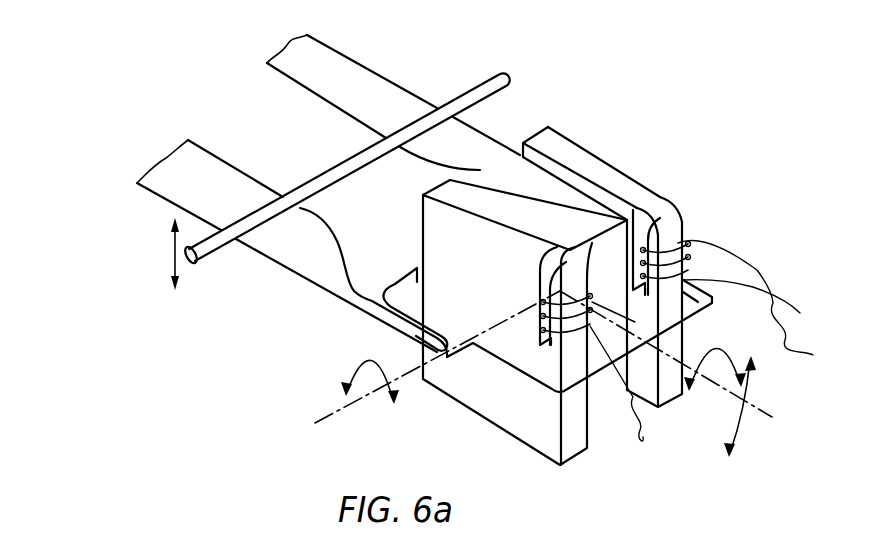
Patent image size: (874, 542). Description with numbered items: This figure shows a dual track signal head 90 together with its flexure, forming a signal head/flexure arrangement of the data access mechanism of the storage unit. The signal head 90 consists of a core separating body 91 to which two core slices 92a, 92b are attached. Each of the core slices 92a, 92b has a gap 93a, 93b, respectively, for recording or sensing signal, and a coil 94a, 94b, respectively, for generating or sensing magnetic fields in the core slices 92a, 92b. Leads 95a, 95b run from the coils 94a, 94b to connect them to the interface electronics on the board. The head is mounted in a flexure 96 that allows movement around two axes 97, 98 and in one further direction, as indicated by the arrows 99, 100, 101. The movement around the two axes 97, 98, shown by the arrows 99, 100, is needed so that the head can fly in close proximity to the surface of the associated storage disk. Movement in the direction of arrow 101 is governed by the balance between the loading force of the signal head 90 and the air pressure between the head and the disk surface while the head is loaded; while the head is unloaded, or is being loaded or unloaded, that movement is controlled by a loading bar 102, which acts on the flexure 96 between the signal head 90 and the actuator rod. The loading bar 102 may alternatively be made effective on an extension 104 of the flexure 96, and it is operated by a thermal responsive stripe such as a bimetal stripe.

The dual track signal head 90 is at (548, 205).
The core separating body 91 is at (487, 183).
The core slice 92a is at (440, 243).
The core slice 92b is at (613, 178).
The gap 93a is at (547, 248).
The gap 93b is at (645, 198).
The coil 94a is at (547, 302).
The coil 94b is at (703, 243).
The lead 95a is at (633, 407).
The lead 95b is at (793, 312).
The flexure 96 is at (378, 98).
The axis 97 is at (342, 410).
The axis 98 is at (772, 417).
The arrow 99 is at (357, 360).
The arrow 100 is at (729, 357).
The arrow 101 is at (753, 384).
The loading bar 102 is at (462, 107).
The extension 104 is at (171, 253).